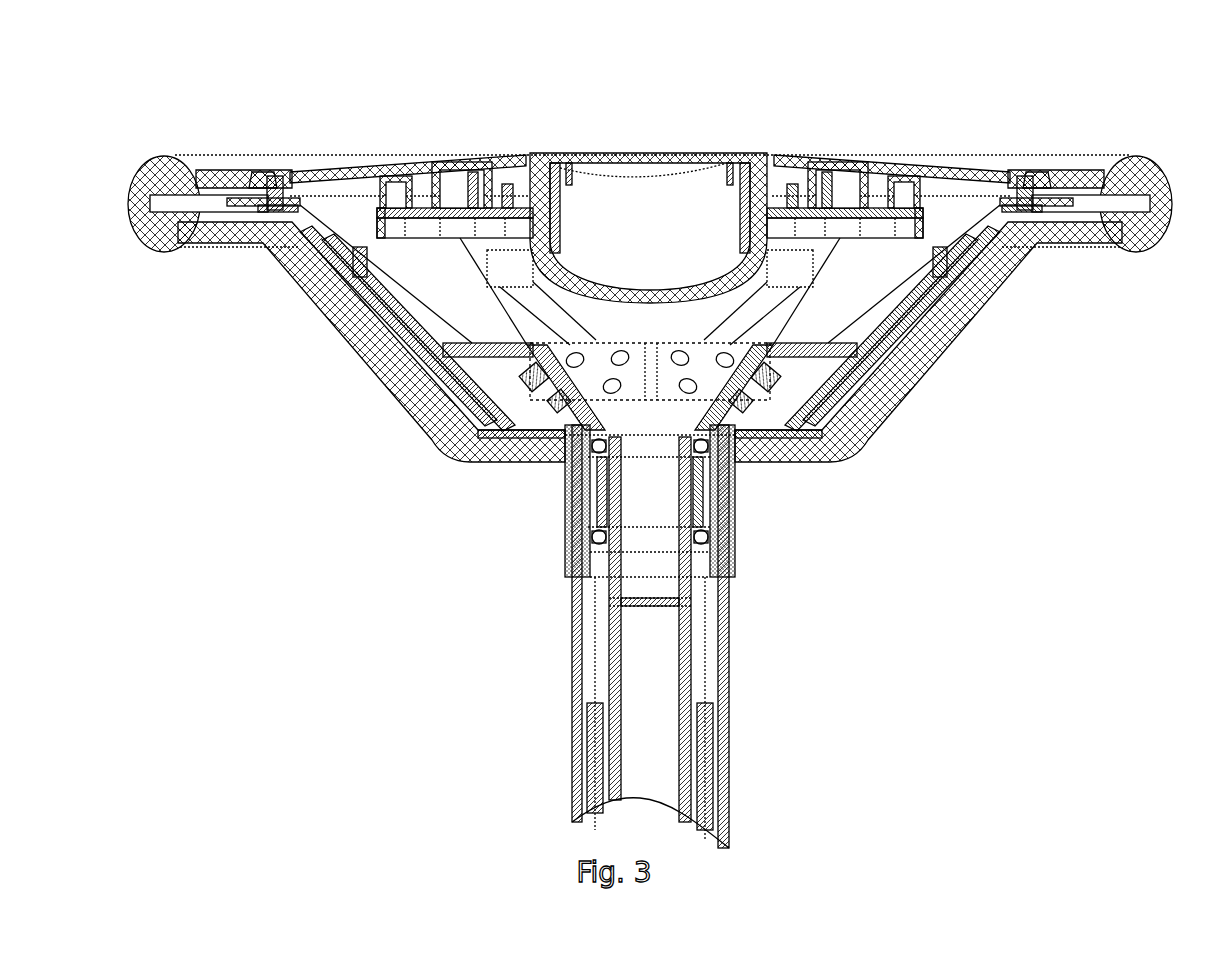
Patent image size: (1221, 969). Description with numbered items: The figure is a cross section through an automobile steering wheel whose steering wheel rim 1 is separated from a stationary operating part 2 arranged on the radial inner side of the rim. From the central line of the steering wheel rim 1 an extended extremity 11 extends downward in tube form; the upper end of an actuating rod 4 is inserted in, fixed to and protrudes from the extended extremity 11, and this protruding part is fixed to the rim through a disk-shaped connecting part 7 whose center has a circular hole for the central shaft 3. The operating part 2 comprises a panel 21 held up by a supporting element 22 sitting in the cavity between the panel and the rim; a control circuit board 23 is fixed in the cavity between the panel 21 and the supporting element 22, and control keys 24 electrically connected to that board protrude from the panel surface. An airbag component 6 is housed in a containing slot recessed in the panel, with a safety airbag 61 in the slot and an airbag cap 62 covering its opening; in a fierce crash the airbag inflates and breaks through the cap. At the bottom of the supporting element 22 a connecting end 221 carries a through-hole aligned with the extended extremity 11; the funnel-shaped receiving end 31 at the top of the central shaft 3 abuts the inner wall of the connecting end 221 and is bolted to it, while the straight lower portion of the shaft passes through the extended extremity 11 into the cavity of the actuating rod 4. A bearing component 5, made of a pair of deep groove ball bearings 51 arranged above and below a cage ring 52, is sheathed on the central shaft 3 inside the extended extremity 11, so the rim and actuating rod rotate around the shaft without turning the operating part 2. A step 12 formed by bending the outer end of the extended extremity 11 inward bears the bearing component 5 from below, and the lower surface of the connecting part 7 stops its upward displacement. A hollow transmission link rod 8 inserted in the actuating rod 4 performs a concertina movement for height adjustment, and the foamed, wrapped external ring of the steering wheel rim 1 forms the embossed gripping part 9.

The steering wheel rim 1 is at (952, 331).
The operating part 2 is at (866, 103).
The central shaft 3 is at (687, 670).
The actuating rod 4 is at (725, 598).
The bearing component 5 is at (526, 501).
The bearings 51 is at (565, 457).
The cage ring 52 is at (603, 492).
The airbag component 6 is at (648, 167).
The safety airbag 61 is at (553, 223).
The airbag cap 62 is at (578, 158).
The connecting part 7 is at (553, 430).
The transmission link rod 8 is at (700, 770).
The gripping part 9 is at (1148, 160).
The extended extremity 11 is at (745, 505).
The step 12 is at (572, 598).
The panel 21 is at (315, 175).
The supporting element 22 is at (950, 300).
The connecting end 221 is at (865, 396).
The control circuit board 23 is at (872, 212).
The control key 24 is at (447, 160).
The receiving end 31 is at (770, 434).